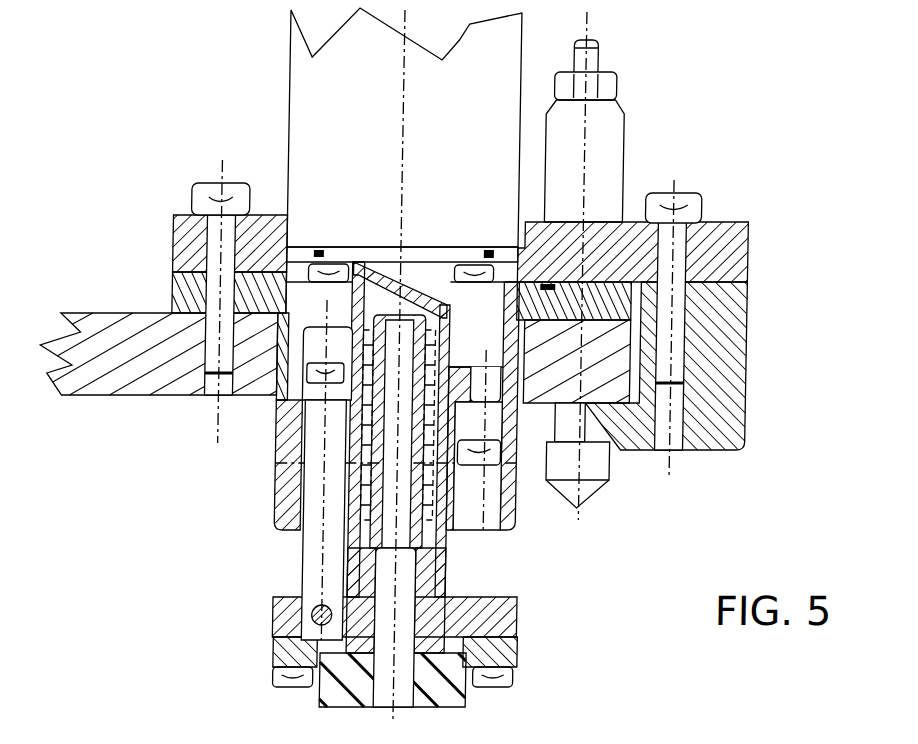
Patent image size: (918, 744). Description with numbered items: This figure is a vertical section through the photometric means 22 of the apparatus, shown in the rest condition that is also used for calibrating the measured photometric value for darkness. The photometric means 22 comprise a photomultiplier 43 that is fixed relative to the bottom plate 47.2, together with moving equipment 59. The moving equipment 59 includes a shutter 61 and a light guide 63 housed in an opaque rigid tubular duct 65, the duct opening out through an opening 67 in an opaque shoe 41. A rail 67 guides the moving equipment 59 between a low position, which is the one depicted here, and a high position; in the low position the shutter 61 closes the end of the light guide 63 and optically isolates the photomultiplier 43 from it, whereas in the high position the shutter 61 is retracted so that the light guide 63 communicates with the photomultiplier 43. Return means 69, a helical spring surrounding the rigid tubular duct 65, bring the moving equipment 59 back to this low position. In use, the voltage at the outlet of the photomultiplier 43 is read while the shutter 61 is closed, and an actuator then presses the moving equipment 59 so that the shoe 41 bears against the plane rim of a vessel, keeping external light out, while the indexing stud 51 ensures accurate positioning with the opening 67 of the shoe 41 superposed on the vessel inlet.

The photometric means 22 is at (188, 160).
The opaque shoe 41 is at (472, 702).
The photomultiplier 43 is at (291, 87).
The bottom plate 47.2 is at (134, 395).
The indexing stud 51 is at (618, 478).
The moving equipment 59 is at (268, 539).
The shutter 61 is at (432, 297).
The light guide 63 is at (417, 567).
The opaque rigid tubular duct 65 is at (440, 591).
The rail 67 is at (312, 577).
The return means 69 is at (436, 515).